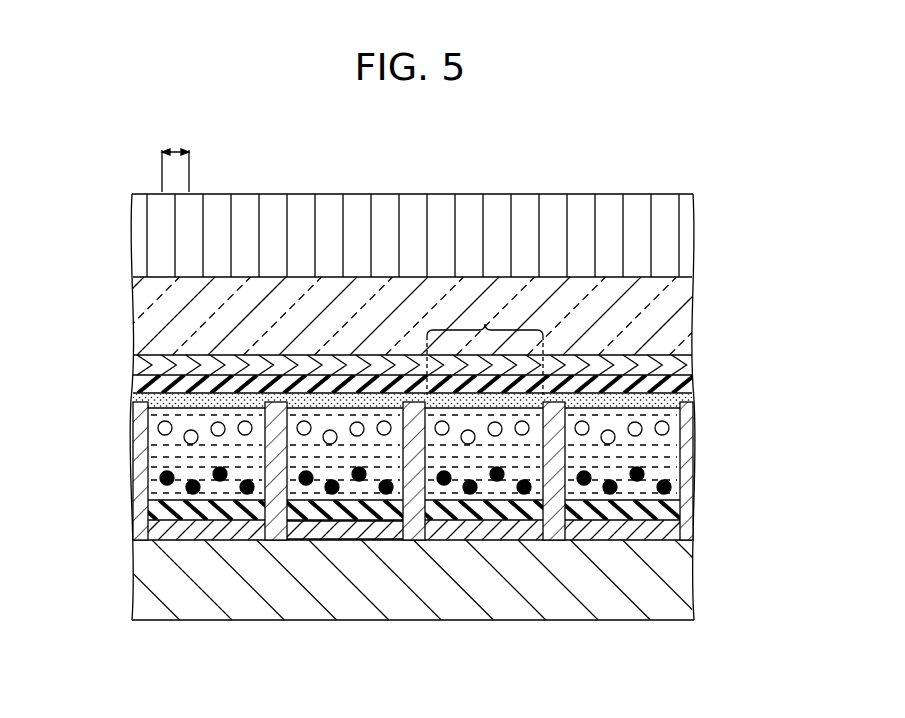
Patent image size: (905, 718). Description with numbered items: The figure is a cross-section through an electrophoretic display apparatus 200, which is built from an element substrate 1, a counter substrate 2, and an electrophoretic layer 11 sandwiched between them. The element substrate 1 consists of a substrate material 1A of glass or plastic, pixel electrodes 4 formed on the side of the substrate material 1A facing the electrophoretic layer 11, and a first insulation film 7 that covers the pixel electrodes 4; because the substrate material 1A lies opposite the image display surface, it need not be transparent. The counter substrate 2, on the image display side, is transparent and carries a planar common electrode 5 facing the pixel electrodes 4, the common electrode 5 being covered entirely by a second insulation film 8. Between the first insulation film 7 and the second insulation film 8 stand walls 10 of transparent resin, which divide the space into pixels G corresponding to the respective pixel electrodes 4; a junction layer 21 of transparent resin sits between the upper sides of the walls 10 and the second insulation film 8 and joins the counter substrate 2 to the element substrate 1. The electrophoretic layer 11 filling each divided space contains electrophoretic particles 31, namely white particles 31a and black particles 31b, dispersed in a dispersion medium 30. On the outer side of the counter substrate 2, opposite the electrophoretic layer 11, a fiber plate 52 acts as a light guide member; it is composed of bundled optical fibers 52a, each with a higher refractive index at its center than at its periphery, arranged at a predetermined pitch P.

The electrophoretic display apparatus 200 is at (692, 98).
The fiber plate 52 is at (451, 192).
The optical fibers 52a is at (668, 235).
The pitch P is at (175, 156).
The counter substrate 2 is at (670, 312).
The pixels G is at (485, 345).
The common electrode 5 is at (676, 366).
The second insulation film 8 is at (670, 392).
The junction layer 21 is at (670, 405).
The electrophoretic layer 11 is at (415, 553).
The dispersion medium 30 is at (317, 522).
The walls 10 is at (678, 455).
The element substrate 1 is at (399, 604).
The first insulation film 7 is at (680, 510).
The pixel electrodes 4 is at (420, 615).
The electrophoretic particles 31 is at (420, 615).
The white particles 31a is at (400, 522).
The black particles 31b is at (365, 522).
The substrate material 1A is at (386, 580).